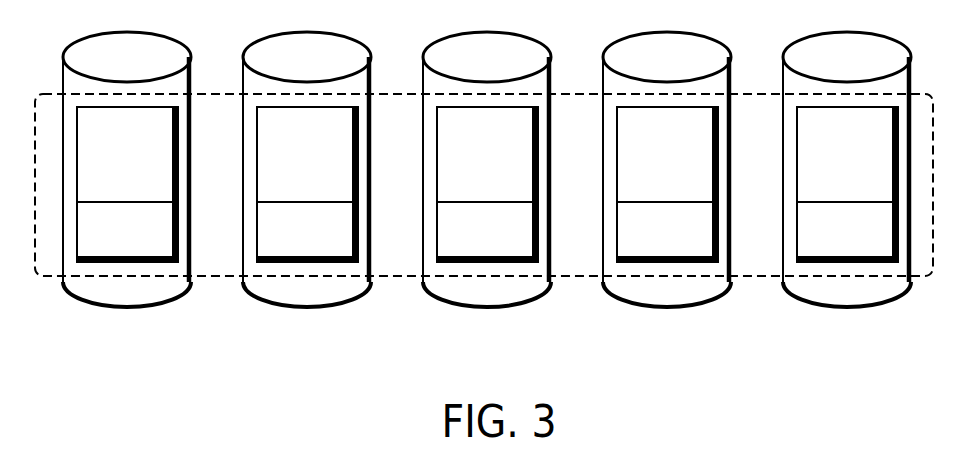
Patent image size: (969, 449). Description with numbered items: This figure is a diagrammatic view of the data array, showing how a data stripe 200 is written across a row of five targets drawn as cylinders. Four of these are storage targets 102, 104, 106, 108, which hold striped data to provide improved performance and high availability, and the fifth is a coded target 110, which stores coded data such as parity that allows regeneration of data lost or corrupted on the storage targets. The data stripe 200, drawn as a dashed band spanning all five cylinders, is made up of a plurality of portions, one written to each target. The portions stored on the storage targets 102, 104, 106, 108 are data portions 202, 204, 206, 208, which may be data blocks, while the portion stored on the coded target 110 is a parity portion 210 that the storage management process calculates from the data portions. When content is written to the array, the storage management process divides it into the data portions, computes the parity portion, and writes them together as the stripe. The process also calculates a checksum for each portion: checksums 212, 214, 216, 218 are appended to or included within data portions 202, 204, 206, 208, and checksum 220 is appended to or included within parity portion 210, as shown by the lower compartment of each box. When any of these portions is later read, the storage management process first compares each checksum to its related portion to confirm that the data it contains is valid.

The data stripe 200 is at (36, 277).
The storage target 102 is at (147, 68).
The storage target 104 is at (327, 68).
The storage target 106 is at (507, 68).
The storage target 108 is at (687, 68).
The coded target 110 is at (867, 68).
The data portion 202 is at (147, 163).
The data portion 204 is at (327, 163).
The data portion 206 is at (507, 163).
The data portion 208 is at (687, 163).
The parity portion 210 is at (867, 163).
The checksum 212 is at (147, 242).
The checksum 214 is at (327, 242).
The checksum 216 is at (507, 242).
The checksum 218 is at (687, 242).
The checksum 220 is at (867, 242).